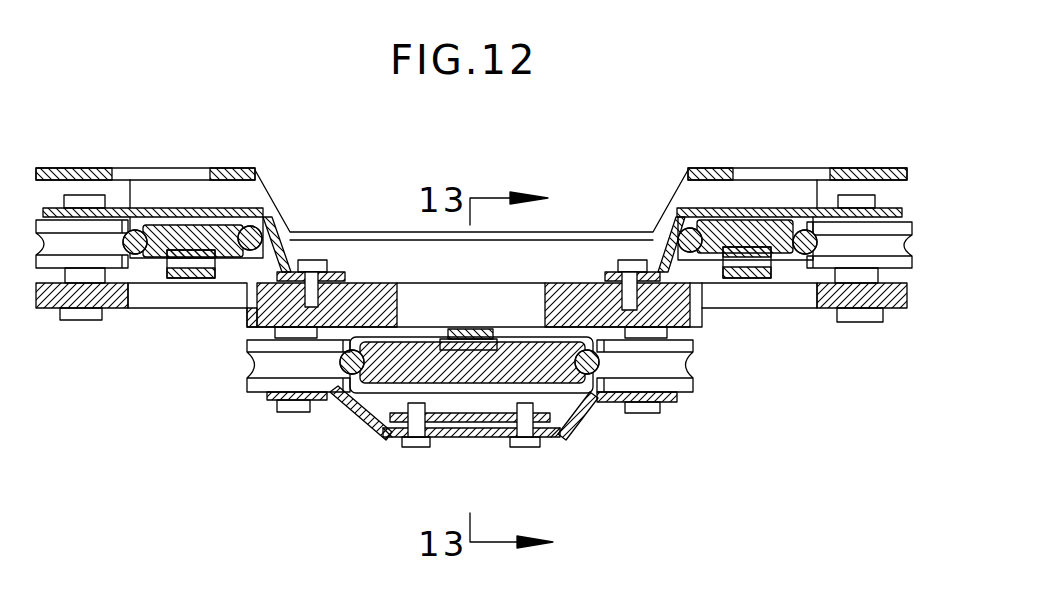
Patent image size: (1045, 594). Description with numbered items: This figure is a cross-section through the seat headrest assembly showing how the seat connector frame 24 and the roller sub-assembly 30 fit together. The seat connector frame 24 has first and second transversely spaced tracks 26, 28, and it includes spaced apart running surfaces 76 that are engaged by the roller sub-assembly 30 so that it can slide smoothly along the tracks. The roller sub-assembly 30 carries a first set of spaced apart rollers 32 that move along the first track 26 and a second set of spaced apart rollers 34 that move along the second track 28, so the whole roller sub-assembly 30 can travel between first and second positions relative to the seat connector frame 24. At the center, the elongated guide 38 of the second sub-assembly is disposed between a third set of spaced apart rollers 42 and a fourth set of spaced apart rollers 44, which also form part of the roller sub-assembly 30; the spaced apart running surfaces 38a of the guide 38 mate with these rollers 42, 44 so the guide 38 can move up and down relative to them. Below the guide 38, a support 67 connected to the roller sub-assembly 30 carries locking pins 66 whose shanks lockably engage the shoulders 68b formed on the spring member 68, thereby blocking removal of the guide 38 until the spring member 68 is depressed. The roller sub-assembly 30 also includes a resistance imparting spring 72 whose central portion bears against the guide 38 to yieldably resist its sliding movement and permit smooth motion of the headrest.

The seat connector frame 24 is at (180, 222).
The first track 26 is at (148, 285).
The second track 28 is at (806, 253).
The roller sub-assembly 30 is at (571, 289).
The first set of spaced apart rollers 32 is at (88, 238).
The second set of spaced apart rollers 34 is at (855, 238).
The guide 38 is at (417, 351).
The running surfaces 38a is at (580, 356).
The third set of spaced apart rollers 42 is at (272, 362).
The fourth set of spaced apart rollers 44 is at (672, 360).
The locking pins 66 is at (415, 447).
The support 67 is at (355, 417).
The spring member 68 is at (477, 437).
The shoulders 68b is at (383, 430).
The spring 72 is at (463, 328).
The running surfaces 76 is at (193, 253).